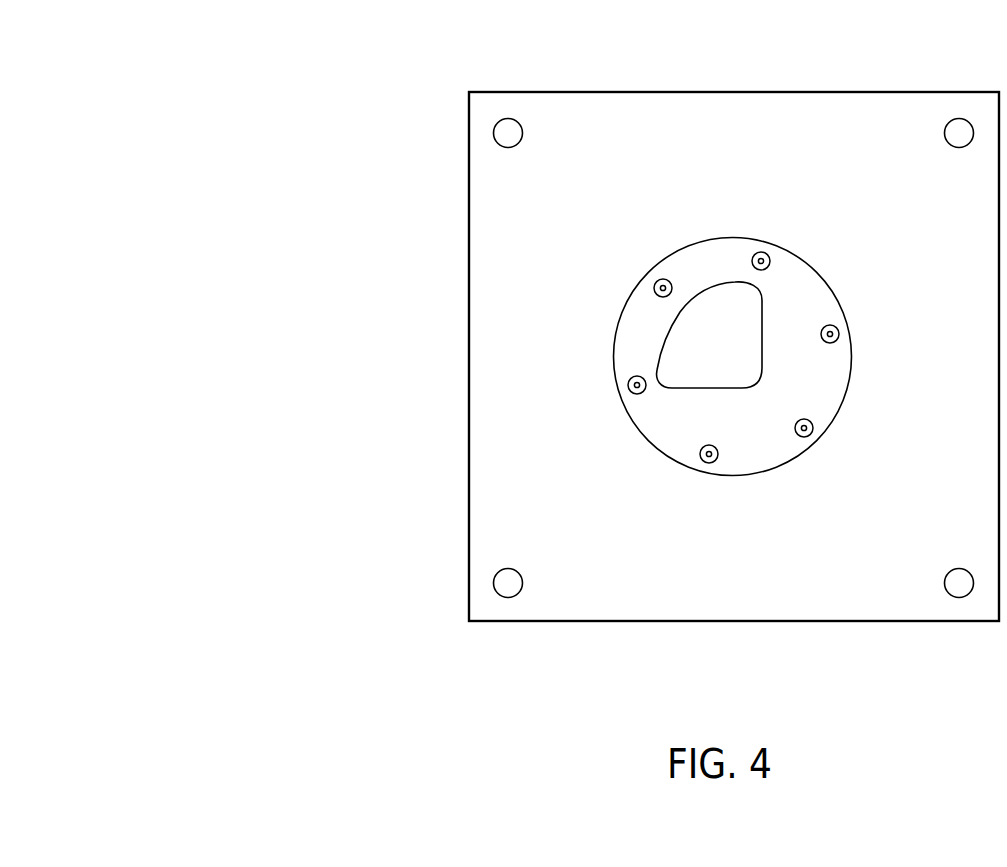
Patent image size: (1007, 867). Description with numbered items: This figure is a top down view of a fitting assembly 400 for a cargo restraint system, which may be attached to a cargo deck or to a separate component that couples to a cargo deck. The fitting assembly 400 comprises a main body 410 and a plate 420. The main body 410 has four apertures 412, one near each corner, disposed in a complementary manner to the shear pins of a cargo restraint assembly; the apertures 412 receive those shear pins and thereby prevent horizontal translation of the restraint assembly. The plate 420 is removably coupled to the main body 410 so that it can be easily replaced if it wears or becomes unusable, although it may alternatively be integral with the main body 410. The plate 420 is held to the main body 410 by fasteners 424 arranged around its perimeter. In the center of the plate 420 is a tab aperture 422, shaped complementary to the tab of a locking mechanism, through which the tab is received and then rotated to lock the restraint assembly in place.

The fitting assembly 400 is at (210, 88).
The main body 410 is at (478, 370).
The apertures 412 is at (503, 128).
The plate 420 is at (689, 254).
The tab aperture 422 is at (709, 335).
The fasteners 424 is at (660, 288).